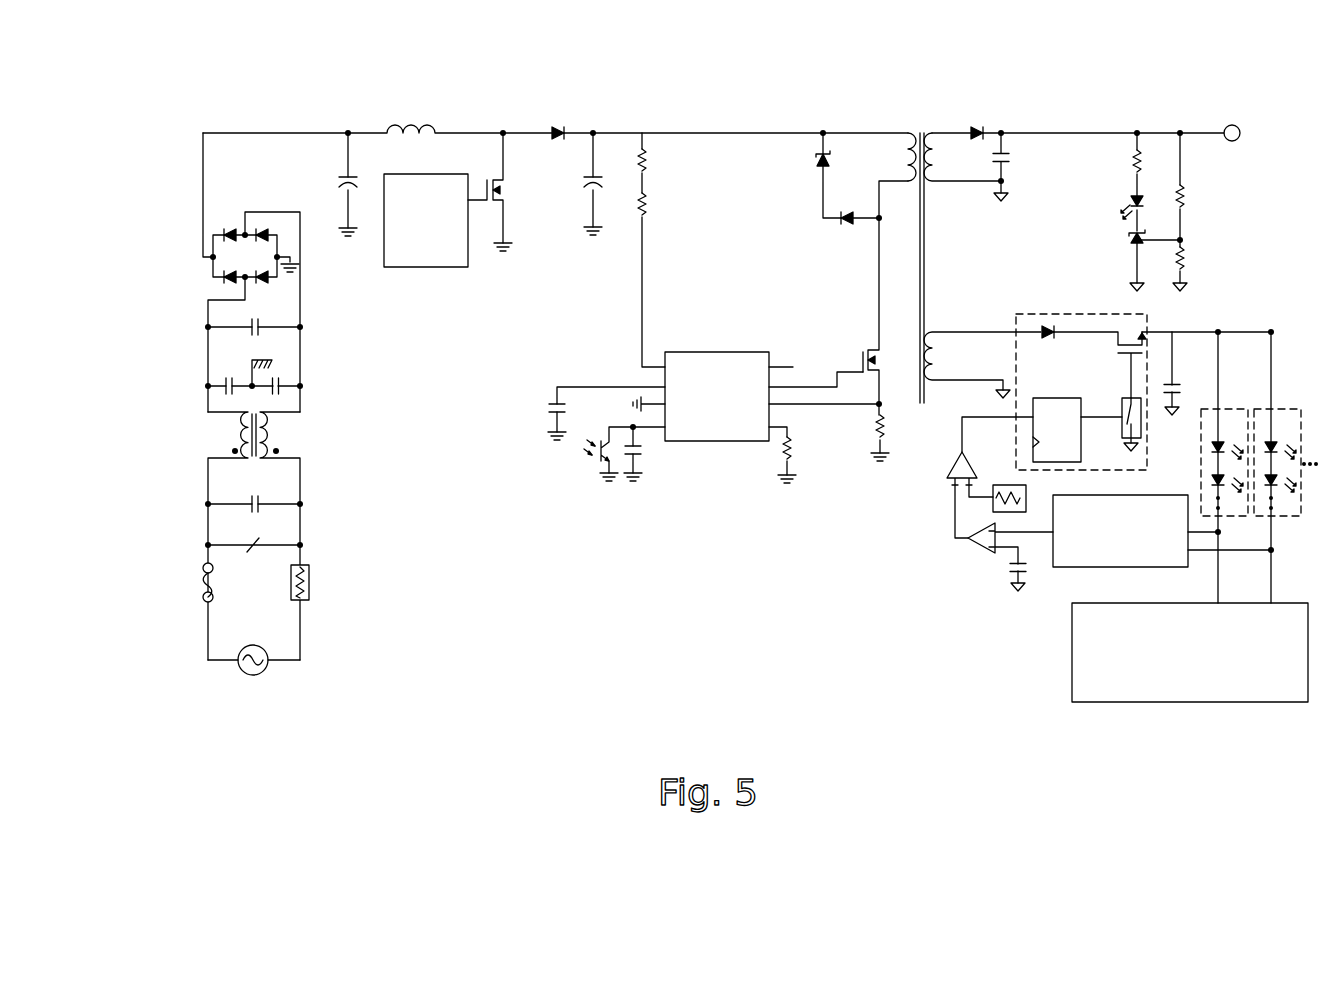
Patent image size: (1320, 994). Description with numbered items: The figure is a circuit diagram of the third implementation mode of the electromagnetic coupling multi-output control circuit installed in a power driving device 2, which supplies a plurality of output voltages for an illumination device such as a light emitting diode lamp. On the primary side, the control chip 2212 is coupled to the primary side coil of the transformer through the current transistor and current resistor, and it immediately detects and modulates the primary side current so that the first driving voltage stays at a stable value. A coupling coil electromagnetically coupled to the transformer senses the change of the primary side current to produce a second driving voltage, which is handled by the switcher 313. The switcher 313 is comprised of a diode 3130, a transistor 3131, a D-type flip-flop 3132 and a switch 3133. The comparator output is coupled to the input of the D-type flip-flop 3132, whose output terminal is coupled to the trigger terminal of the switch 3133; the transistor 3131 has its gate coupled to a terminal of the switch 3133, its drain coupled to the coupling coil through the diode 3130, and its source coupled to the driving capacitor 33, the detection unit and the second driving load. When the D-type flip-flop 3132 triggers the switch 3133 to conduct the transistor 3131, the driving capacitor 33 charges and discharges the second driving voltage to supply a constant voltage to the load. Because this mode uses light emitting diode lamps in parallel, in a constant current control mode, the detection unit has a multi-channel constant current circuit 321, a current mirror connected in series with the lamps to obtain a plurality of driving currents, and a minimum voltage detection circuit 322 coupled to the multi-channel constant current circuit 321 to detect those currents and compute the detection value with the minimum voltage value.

The power driving device 2 is at (190, 118).
The control chip 2212 is at (697, 441).
The switcher 313 is at (1148, 317).
The diode 3130 is at (1048, 325).
The transistor 3131 is at (1126, 330).
The D-type flip-flop 3132 is at (1049, 397).
The switch 3133 is at (1122, 406).
The driving capacitor 33 is at (1184, 391).
The minimum voltage detection circuit 322 is at (1056, 568).
The multi-channel constant current circuit 321 is at (1191, 704).